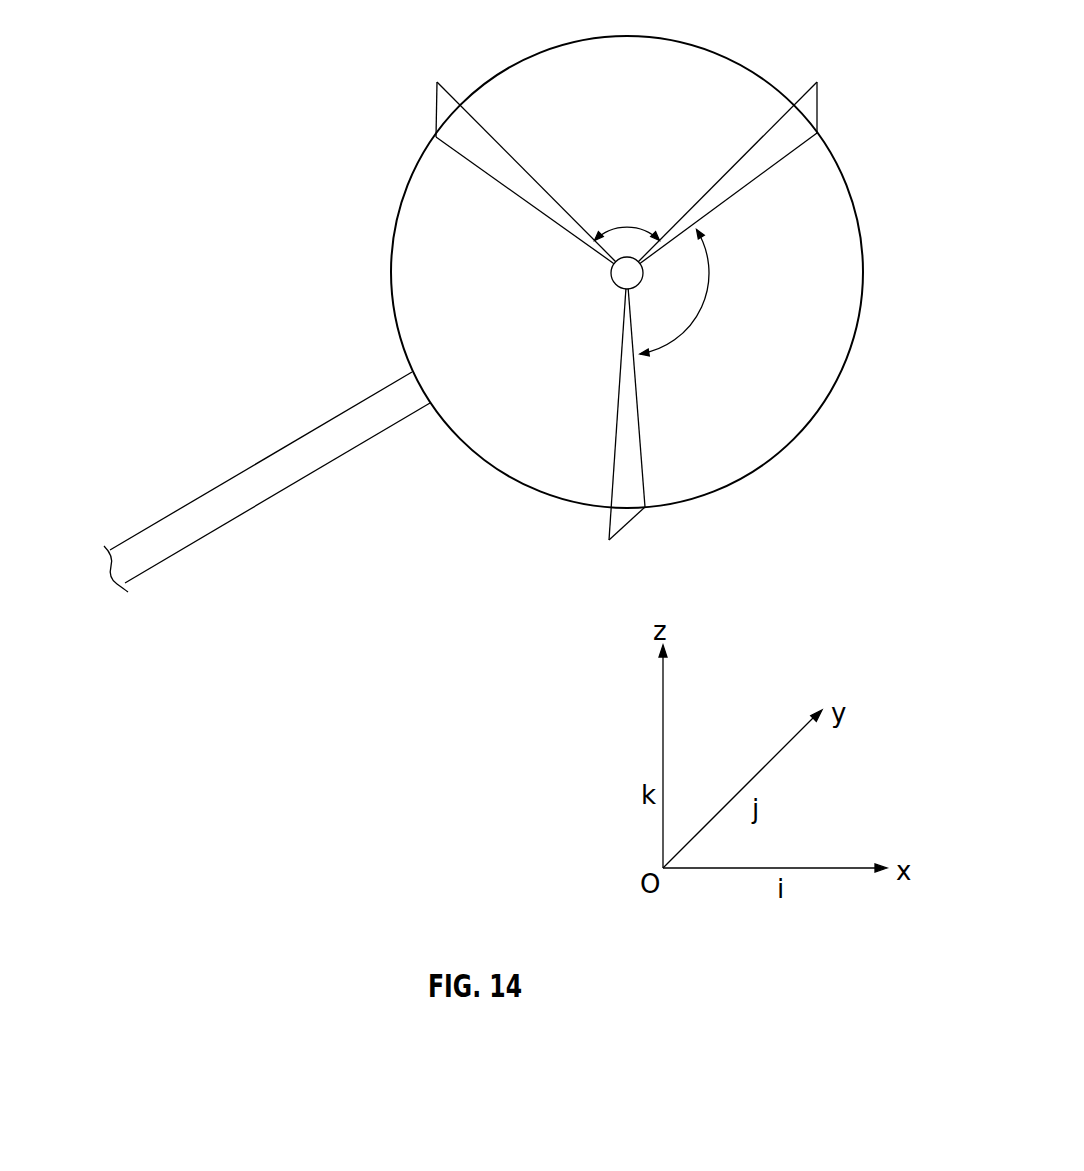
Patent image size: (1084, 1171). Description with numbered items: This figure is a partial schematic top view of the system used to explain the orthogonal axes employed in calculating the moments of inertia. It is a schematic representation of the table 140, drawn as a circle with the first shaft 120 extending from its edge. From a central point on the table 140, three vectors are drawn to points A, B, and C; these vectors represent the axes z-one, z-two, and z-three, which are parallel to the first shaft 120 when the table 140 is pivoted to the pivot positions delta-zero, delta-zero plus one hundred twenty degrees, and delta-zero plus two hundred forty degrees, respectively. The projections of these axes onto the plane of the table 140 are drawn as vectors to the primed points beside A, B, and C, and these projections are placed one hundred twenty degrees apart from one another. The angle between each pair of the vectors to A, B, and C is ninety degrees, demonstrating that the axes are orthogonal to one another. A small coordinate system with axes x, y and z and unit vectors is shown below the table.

The table 140 is at (674, 52).
The first shaft 120 is at (256, 464).
The vector endpoint A is at (748, 159).
The vector endpoint B is at (504, 152).
The vector endpoint C is at (625, 439).